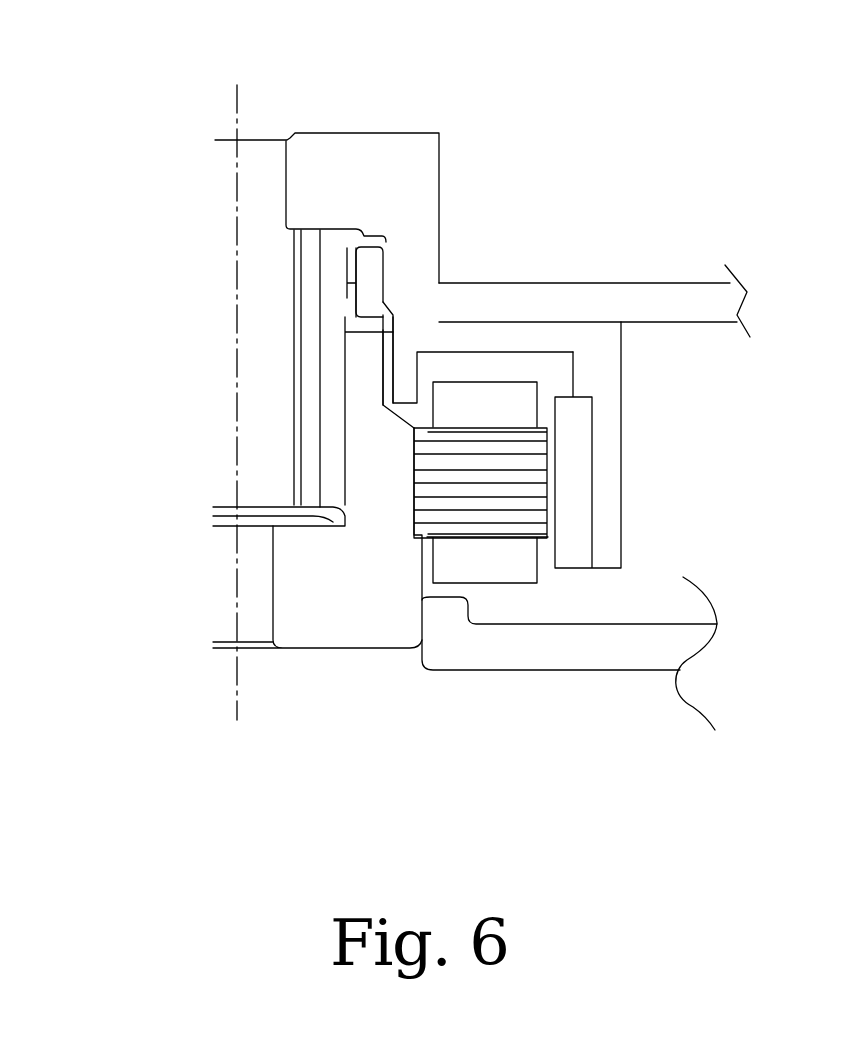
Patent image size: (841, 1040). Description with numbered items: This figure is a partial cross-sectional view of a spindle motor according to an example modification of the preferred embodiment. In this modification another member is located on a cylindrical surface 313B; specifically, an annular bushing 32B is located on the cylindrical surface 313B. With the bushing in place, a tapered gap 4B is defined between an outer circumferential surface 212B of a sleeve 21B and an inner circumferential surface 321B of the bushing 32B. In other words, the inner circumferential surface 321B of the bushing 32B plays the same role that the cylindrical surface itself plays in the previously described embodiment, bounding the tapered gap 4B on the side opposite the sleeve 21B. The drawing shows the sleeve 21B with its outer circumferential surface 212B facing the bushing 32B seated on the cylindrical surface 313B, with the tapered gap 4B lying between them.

The sleeve 21B is at (337, 252).
The outer circumferential surface 212B is at (353, 248).
The tapered gap 4B is at (347, 302).
The annular bushing 32B is at (370, 285).
The inner circumferential surface 321B is at (357, 257).
The cylindrical surface 313B is at (383, 285).